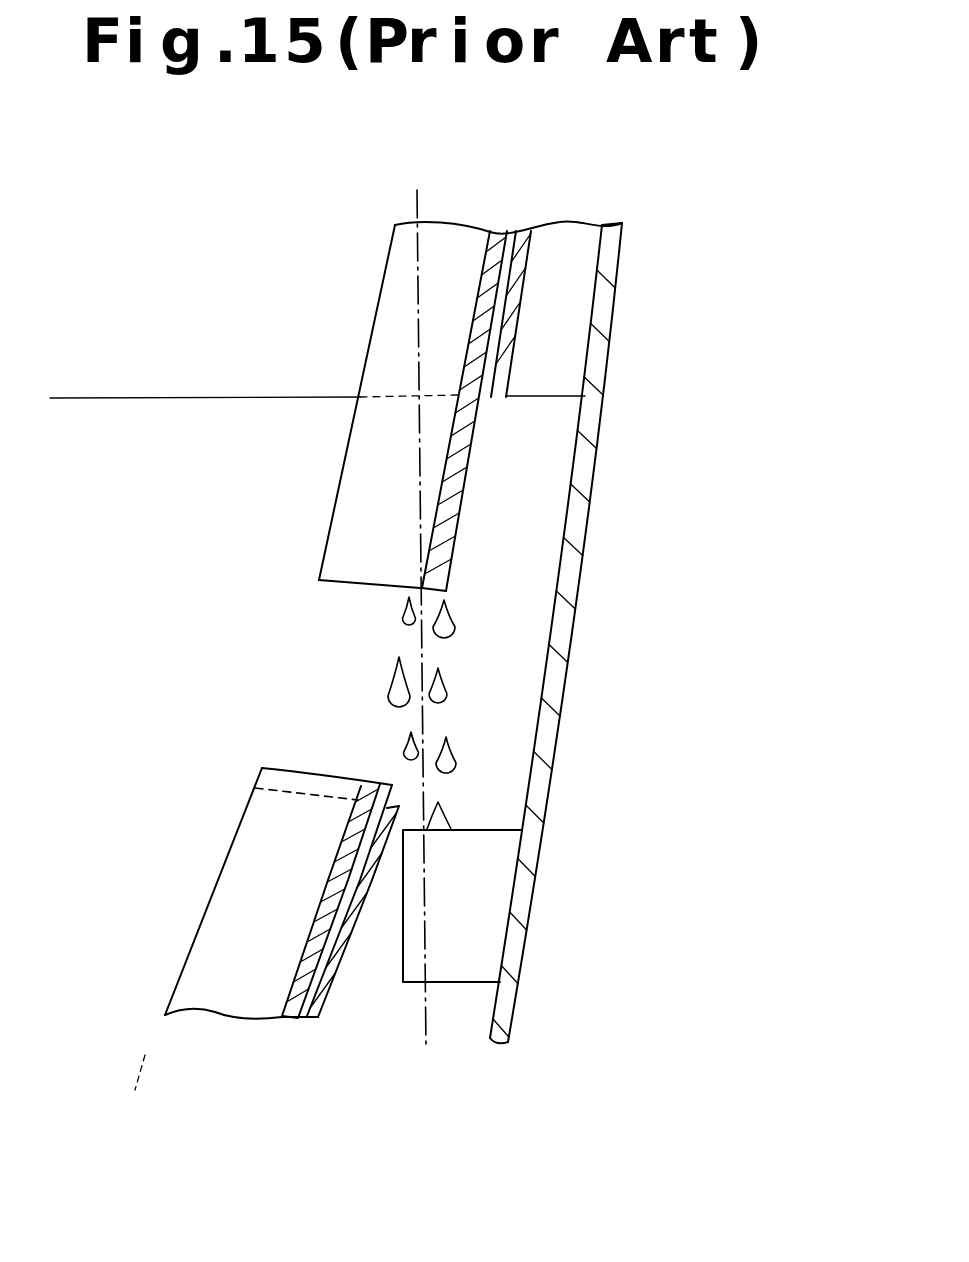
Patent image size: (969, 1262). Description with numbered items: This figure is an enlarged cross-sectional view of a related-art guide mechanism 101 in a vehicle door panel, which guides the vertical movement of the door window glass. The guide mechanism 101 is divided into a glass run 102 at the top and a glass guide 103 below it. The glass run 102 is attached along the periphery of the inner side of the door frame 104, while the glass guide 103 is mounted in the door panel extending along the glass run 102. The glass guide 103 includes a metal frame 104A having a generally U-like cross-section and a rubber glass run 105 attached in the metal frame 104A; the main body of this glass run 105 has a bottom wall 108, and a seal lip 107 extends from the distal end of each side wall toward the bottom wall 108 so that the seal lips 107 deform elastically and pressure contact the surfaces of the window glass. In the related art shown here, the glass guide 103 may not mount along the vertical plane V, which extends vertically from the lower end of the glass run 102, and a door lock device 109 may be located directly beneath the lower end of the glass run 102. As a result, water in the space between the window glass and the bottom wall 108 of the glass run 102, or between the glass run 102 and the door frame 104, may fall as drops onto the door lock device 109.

The guide mechanism 101 is at (238, 305).
The glass run 102 is at (368, 278).
The glass guide 103 is at (220, 815).
The door frame 104 is at (535, 245).
The metal frame 104A is at (350, 933).
The glass run 105 is at (283, 1018).
The seal lip 107 is at (380, 347).
The bottom wall 108 is at (486, 266).
The door lock device 109 is at (490, 893).
The vertical plane V is at (428, 1027).